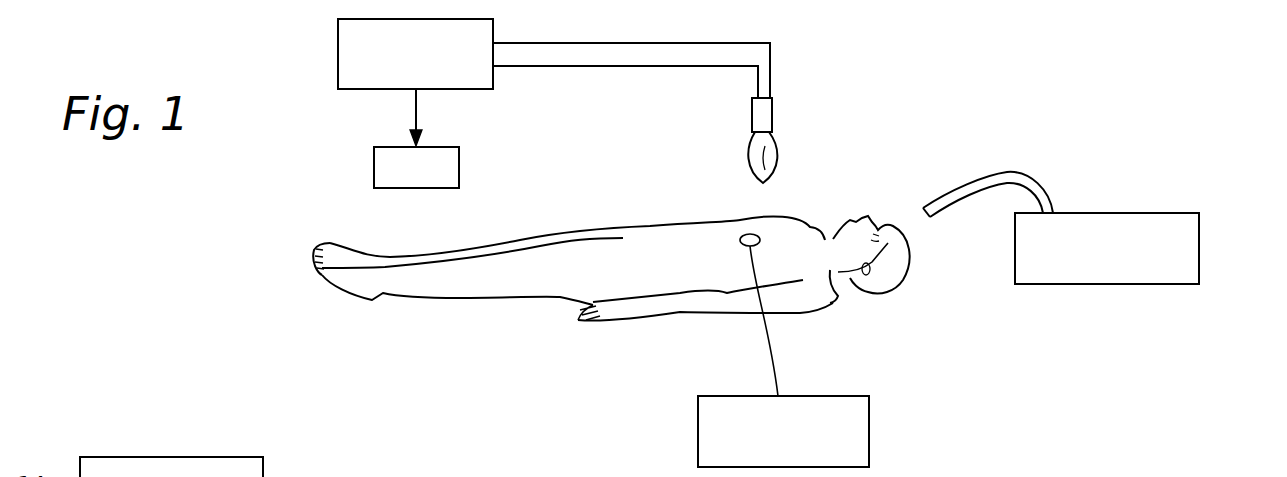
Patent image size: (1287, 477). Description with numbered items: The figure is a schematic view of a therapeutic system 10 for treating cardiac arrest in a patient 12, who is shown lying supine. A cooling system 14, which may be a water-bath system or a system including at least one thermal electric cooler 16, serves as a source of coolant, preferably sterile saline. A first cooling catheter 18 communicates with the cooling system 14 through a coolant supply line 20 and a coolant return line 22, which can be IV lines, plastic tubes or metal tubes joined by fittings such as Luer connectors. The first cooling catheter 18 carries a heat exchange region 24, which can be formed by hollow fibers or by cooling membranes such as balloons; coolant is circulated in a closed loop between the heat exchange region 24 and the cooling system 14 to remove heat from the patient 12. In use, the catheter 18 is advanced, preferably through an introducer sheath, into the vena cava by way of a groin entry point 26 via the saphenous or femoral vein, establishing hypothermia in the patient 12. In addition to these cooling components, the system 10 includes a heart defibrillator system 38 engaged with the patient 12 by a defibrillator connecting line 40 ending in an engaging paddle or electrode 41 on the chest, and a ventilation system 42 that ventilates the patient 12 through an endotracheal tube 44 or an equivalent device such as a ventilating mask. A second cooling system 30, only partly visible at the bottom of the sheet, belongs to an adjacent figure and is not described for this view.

The therapeutic system 10 is at (824, 60).
The patient 12 is at (833, 308).
The cooling system 14 is at (338, 47).
The thermal electric cooler 16 is at (374, 162).
The first cooling catheter 18 is at (773, 110).
The coolant supply line 20 is at (578, 43).
The coolant return line 22 is at (578, 66).
The heat exchange region 24 is at (722, 150).
The groin entry point 26 is at (565, 238).
The cooling system of second embodiment 30 is at (322, 476).
The heart defibrillator system 38 is at (869, 424).
The defibrillator connecting line 40 is at (778, 365).
The engaging paddle/electrode 41 is at (757, 233).
The ventilation system 42 is at (1199, 247).
The endotracheal tube 44 is at (1008, 170).